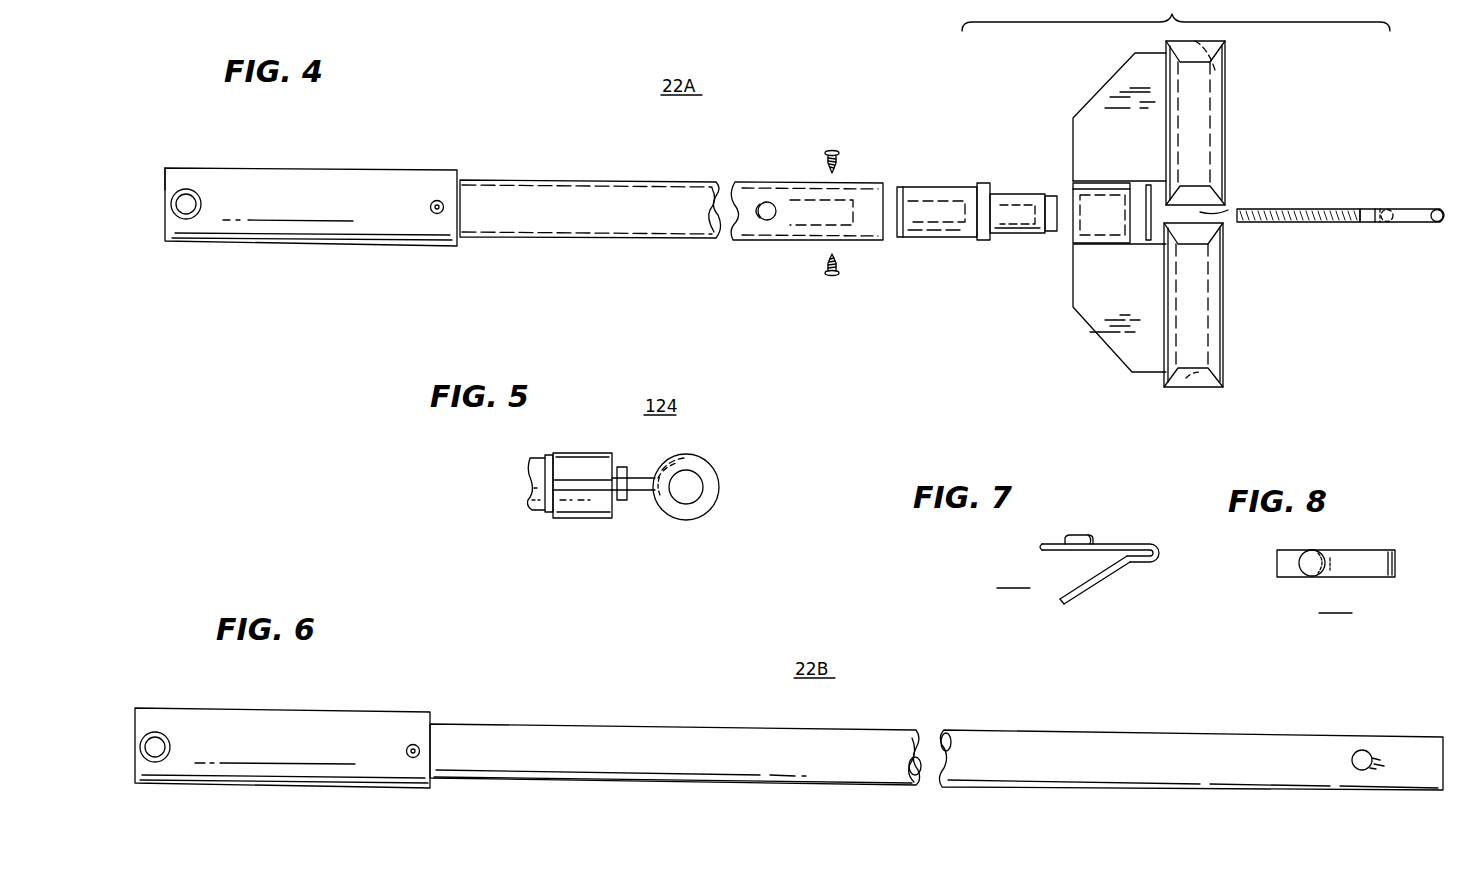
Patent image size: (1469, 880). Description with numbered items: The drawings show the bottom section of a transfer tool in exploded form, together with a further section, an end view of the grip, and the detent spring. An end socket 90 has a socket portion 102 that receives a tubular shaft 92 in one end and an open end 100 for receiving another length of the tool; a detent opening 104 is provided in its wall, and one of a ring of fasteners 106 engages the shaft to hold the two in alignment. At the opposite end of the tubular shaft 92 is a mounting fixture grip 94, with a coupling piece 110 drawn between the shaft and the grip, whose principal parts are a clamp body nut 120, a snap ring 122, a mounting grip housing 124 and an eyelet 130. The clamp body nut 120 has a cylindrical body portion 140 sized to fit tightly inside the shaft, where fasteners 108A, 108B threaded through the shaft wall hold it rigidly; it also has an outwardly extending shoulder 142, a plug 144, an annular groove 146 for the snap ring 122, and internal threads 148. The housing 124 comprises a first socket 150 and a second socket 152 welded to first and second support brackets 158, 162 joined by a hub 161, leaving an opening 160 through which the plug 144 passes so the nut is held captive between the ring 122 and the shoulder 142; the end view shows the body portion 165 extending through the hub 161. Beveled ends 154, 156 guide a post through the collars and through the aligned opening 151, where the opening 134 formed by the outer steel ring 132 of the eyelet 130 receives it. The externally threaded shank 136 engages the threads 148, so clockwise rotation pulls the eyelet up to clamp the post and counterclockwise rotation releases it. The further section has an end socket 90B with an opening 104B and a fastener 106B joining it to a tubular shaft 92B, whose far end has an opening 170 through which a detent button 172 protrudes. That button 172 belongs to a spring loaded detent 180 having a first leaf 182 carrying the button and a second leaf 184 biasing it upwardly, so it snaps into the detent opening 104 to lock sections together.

In FIG. 4, the end socket 90 is at (316, 180).
In FIG. 6, the end socket 90B is at (280, 727).
In FIG. 4, the tubular shaft 92 is at (623, 172).
In FIG. 6, the tubular shaft 92B is at (712, 716).
In FIG. 4, the mounting fixture grip 94 is at (1176, 15).
In FIG. 4, the open end 100 is at (167, 176).
In FIG. 4, the socket portion 102 is at (380, 190).
In FIG. 4, the detent opening 104 is at (190, 200).
In FIG. 6, the opening 104B is at (163, 733).
In FIG. 4, the fastener 106 is at (440, 200).
In FIG. 6, the fastener 106B is at (413, 744).
In FIG. 4, the fastener 108A is at (830, 149).
In FIG. 4, the fastener 108B is at (832, 277).
In FIG. 4, the coupling member 110 is at (766, 206).
In FIG. 4, the clamp body nut 120 is at (977, 225).
In FIG. 4, the snap ring 122 is at (1148, 184).
In FIG. 4, the mounting grip housing 124 is at (1161, 224).
In FIG. 4, the eyelet 130 is at (1347, 210).
In FIG. 5, the eyelet 130 is at (683, 490).
In FIG. 4, the outer steel ring 132 is at (1440, 208).
In FIG. 4, the opening 134 is at (1410, 223).
In FIG. 4, the externally threaded shank 136 is at (1332, 224).
In FIG. 4, the cylindrical body portion 140 is at (940, 239).
In FIG. 5, the cylindrical body portion 140 is at (530, 480).
In FIG. 4, the shoulder 142 is at (983, 241).
In FIG. 5, the shoulder 142 is at (548, 460).
In FIG. 4, the plug 144 is at (1010, 225).
In FIG. 4, the groove 146 is at (1050, 233).
In FIG. 4, the internal threads 148 is at (1005, 200).
In FIG. 4, the first socket 150 is at (1226, 142).
In FIG. 4, the opening 151 is at (1228, 212).
In FIG. 4, the second socket 152 is at (1224, 342).
In FIG. 4, the first beveled end 154 is at (1205, 42).
In FIG. 5, the first beveled end 154 is at (688, 492).
In FIG. 4, the second beveled end 156 is at (1198, 377).
In FIG. 4, the first support bracket 158 is at (1108, 101).
In FIG. 5, the first support bracket 158 is at (563, 486).
In FIG. 4, the opening 160 is at (1085, 210).
In FIG. 4, the hub 161 is at (1090, 186).
In FIG. 5, the hub 161 is at (568, 456).
In FIG. 4, the second support bracket 162 is at (1152, 358).
In FIG. 5, the body portion 165 is at (620, 468).
In FIG. 6, the opening 170 is at (1191, 759).
In FIG. 6, the detent button 172 is at (1362, 750).
In FIG. 7, the detent button 172 is at (1080, 537).
In FIG. 8, the detent button 172 is at (1314, 555).
In FIG. 7, the spring loaded detent 180 is at (1092, 552).
In FIG. 8, the spring loaded detent 180 is at (1326, 565).
In FIG. 7, the first leaf 182 is at (1134, 545).
In FIG. 7, the second leaf 184 is at (1100, 575).
In FIG. 8, the second leaf 184 is at (1365, 560).